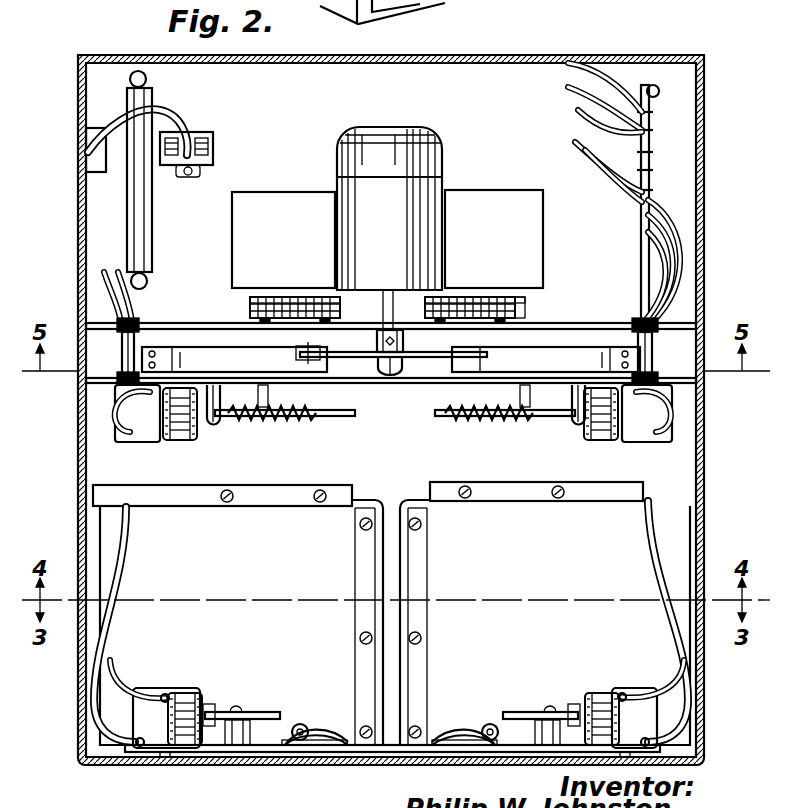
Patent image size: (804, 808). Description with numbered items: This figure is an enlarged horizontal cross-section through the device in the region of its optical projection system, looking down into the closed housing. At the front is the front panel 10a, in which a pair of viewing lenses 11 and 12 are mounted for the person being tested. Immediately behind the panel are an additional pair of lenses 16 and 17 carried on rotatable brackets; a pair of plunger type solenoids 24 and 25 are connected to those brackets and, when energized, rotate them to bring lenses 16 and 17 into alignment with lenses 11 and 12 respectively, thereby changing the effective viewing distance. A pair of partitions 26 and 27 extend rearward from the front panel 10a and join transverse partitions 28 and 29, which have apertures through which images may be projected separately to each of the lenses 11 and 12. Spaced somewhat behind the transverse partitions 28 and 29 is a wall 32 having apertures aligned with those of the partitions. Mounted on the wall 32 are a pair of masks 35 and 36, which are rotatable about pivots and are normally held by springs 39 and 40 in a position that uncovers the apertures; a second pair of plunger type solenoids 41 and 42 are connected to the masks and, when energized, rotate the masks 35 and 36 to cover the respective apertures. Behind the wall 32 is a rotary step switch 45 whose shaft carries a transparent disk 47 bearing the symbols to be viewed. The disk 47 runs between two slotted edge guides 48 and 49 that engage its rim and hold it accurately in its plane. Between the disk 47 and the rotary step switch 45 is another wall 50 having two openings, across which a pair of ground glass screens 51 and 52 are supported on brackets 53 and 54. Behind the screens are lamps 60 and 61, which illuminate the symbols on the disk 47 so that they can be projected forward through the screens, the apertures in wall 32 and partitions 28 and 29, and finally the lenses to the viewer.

The front panel 10a is at (148, 768).
The viewing lens 11 is at (450, 736).
The viewing lens 12 is at (317, 736).
The additional lens 16 is at (520, 710).
The additional lens 17 is at (223, 715).
The plunger type solenoid 24 is at (607, 692).
The plunger type solenoid 25 is at (172, 700).
The partition 26 is at (405, 592).
The partition 27 is at (375, 583).
The transverse partition 28 is at (280, 503).
The transverse partition 29 is at (517, 500).
The wall 32 is at (398, 383).
The mask 35 is at (302, 420).
The mask 36 is at (462, 420).
The spring 39 is at (247, 420).
The spring 40 is at (506, 420).
The plunger type solenoid 41 is at (150, 430).
The plunger type solenoid 42 is at (610, 438).
The rotary step switch 45 is at (415, 153).
The transparent disk 47 is at (421, 360).
The slotted edge guide 48 is at (227, 360).
The slotted edge guide 49 is at (535, 356).
The wall 50 is at (573, 324).
The ground glass screen 51 is at (248, 308).
The ground glass screen 52 is at (533, 304).
The bracket 53 is at (252, 299).
The bracket 54 is at (545, 297).
The lamp 60 is at (280, 200).
The lamp 61 is at (496, 205).